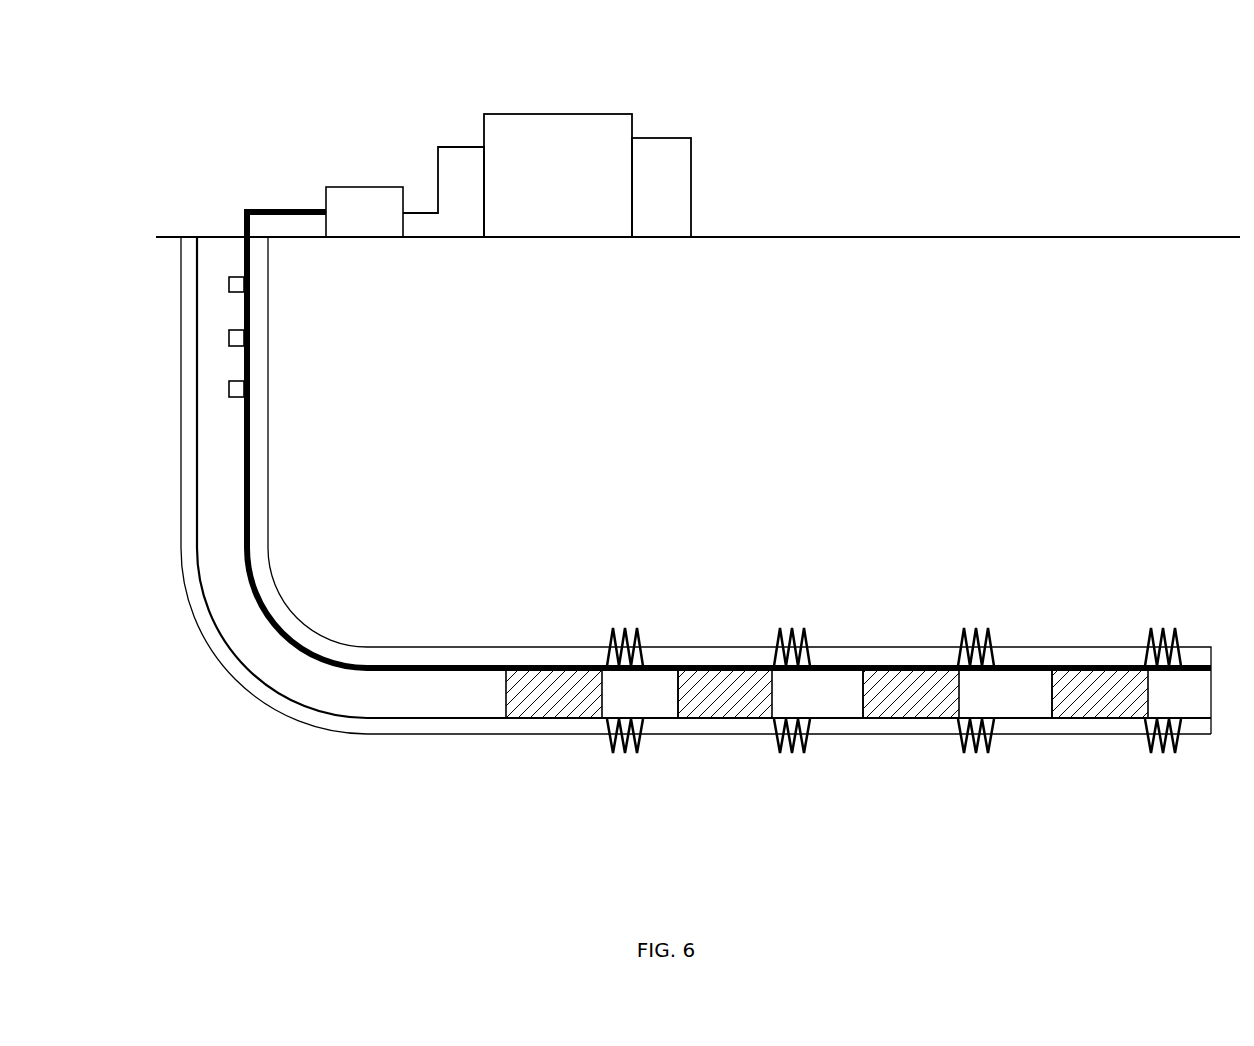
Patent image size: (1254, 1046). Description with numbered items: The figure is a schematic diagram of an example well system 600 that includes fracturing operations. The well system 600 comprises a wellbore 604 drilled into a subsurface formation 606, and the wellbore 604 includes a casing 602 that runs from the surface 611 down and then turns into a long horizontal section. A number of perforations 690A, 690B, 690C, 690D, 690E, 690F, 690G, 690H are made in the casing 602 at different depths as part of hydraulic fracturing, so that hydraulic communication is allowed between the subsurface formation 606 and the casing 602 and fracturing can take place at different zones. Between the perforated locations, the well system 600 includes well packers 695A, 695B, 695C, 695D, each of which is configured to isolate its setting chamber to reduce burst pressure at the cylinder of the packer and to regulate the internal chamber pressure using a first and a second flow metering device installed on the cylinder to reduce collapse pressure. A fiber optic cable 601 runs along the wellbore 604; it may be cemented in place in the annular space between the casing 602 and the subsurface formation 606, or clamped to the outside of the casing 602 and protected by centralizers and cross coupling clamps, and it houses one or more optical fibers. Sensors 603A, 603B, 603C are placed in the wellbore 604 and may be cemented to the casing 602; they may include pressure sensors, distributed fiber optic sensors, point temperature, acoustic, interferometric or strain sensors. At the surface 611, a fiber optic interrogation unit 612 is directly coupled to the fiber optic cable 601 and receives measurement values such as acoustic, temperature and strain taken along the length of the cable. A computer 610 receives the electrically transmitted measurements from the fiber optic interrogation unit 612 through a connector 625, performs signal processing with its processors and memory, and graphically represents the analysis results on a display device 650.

The well system 600 is at (160, 98).
The fiber optic cable 601 is at (410, 666).
The casing 602 is at (364, 734).
The sensor 603A is at (236, 286).
The sensor 603B is at (236, 339).
The sensor 603C is at (236, 390).
The wellbore 604 is at (181, 395).
The subsurface formation 606 is at (463, 377).
The computer 610 is at (503, 114).
The surface 611 is at (920, 237).
The fiber optic interrogation unit 612 is at (364, 212).
The connector 625 is at (418, 213).
The display device 650 is at (660, 147).
The perforation 690A is at (618, 628).
The perforation 690B is at (620, 753).
The perforation 690C is at (797, 628).
The perforation 690D is at (793, 753).
The perforation 690E is at (982, 628).
The perforation 690F is at (985, 753).
The perforation 690G is at (1165, 628).
The centralizer 690H is at (1168, 753).
The well packer 695A is at (560, 680).
The well packer 695B is at (736, 680).
The well packer 695C is at (922, 680).
The well packer 695D is at (1116, 680).